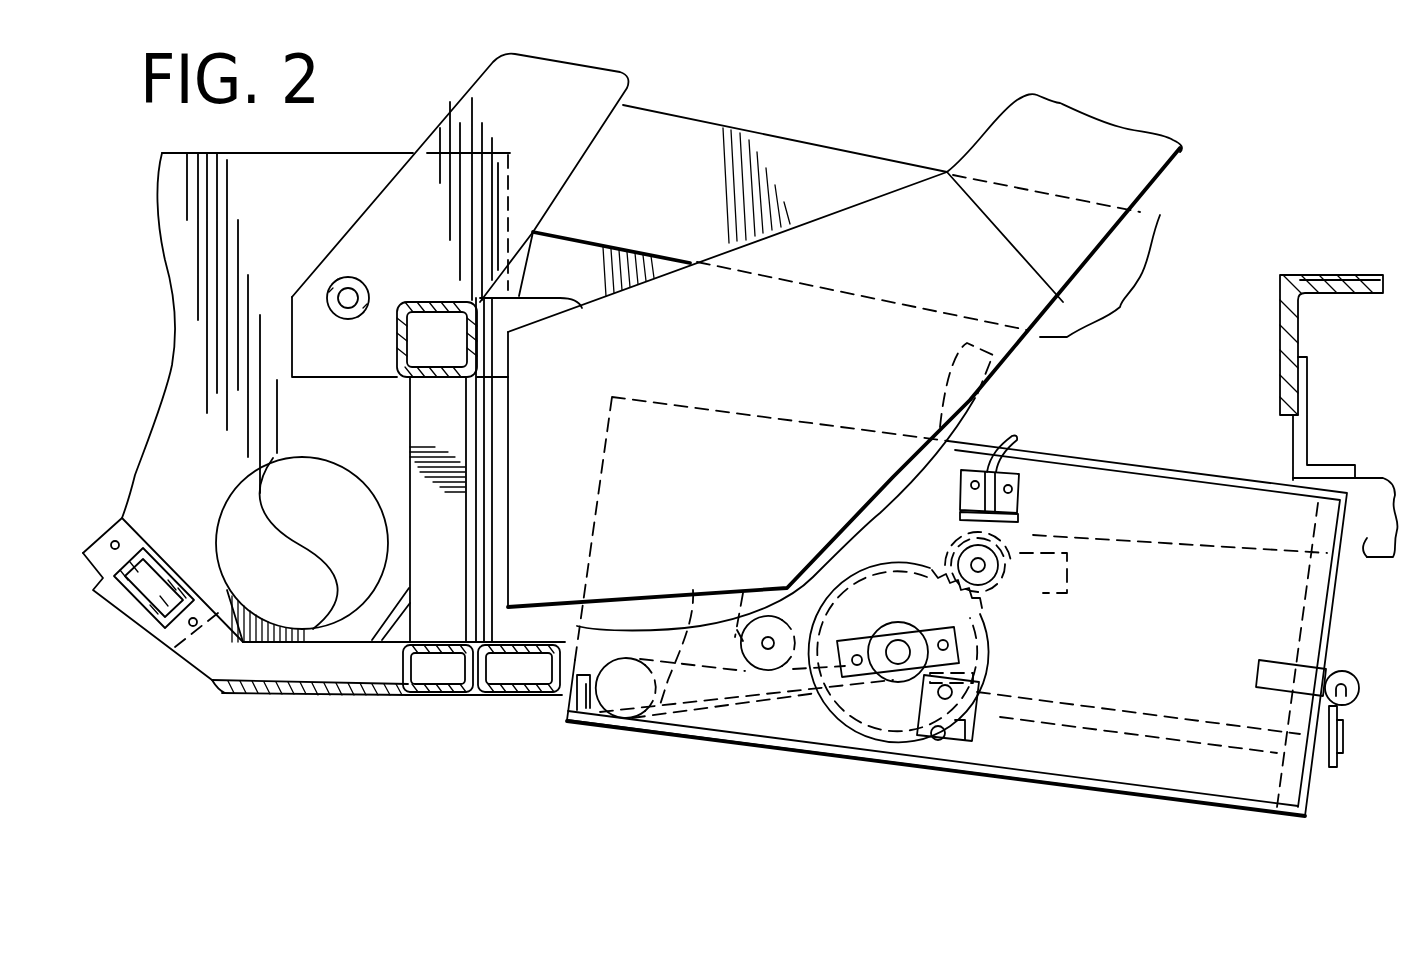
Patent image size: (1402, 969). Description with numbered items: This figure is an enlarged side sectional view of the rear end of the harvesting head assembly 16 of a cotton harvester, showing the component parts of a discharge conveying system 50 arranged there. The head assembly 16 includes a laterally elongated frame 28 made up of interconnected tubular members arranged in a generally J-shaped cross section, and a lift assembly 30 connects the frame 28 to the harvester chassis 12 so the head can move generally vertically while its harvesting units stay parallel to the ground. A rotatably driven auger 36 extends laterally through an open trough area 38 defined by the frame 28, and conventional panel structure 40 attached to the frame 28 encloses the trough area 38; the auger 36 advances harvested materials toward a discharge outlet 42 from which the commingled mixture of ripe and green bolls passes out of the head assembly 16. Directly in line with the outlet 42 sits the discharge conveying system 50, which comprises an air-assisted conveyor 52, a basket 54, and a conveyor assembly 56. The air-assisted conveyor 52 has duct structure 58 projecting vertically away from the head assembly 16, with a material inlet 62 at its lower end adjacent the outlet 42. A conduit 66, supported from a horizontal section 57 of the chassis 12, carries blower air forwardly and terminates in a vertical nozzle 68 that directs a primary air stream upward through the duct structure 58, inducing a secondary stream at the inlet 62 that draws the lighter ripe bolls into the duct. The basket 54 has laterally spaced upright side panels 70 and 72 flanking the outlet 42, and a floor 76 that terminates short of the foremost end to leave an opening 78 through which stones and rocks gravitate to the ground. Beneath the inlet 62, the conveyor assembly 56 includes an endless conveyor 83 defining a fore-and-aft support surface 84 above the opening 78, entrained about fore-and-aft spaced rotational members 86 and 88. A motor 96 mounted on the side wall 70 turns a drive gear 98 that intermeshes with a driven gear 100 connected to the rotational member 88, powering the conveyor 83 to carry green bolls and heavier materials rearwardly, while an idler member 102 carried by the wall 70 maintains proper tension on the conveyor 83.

The chassis 12 is at (1311, 275).
The harvesting head assembly 16 is at (388, 154).
The frame 28 is at (403, 441).
The lift assembly 30 is at (804, 123).
The auger 36 is at (310, 638).
The trough area 38 is at (376, 612).
The panel structure 40 is at (207, 677).
The discharge outlet 42 is at (438, 549).
The discharge conveying system 50 is at (1113, 450).
The air-assisted conveyor 52 is at (1170, 182).
The basket 54 is at (1195, 802).
The conveyor assembly 56 is at (742, 707).
The horizontal section 57 is at (1342, 287).
The duct structure 58 is at (987, 167).
The material inlet 62 is at (508, 452).
The conduit 66 is at (1365, 540).
The vertical nozzle 68 is at (963, 432).
The side panel 70 is at (1078, 753).
The side panel 72 is at (913, 476).
The floor 76 is at (1128, 713).
The opening 78 is at (823, 722).
The endless conveyor 83 is at (672, 717).
The support surface 84 is at (693, 583).
The rotational member 86 is at (620, 705).
The rotational member 88 is at (930, 658).
The motor 96 is at (1067, 573).
The drive gear 98 is at (997, 577).
The driven gear 100 is at (857, 597).
The idler member 102 is at (748, 582).